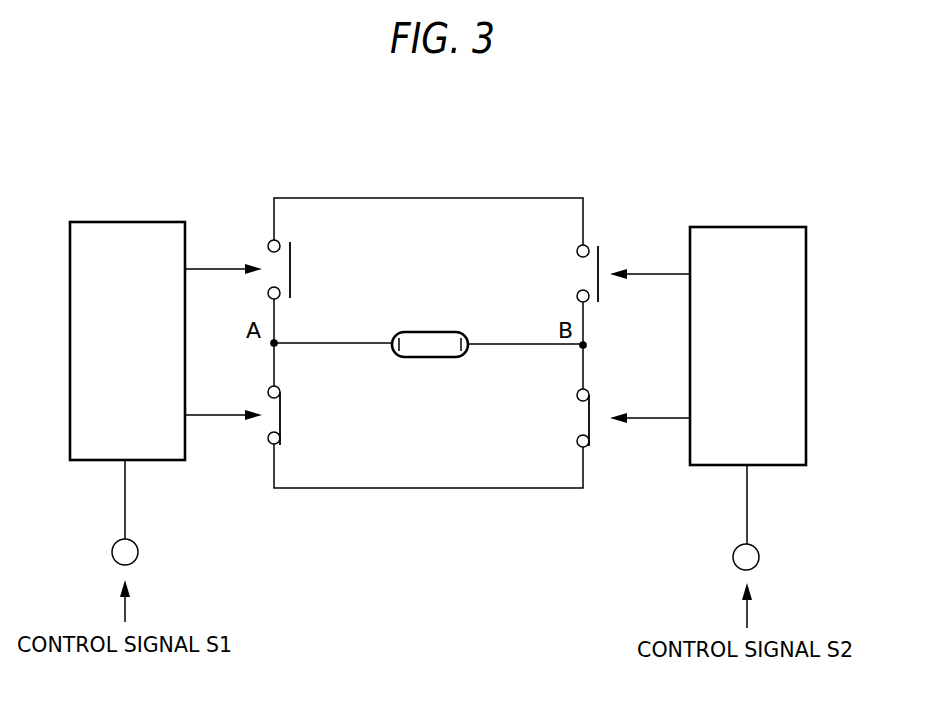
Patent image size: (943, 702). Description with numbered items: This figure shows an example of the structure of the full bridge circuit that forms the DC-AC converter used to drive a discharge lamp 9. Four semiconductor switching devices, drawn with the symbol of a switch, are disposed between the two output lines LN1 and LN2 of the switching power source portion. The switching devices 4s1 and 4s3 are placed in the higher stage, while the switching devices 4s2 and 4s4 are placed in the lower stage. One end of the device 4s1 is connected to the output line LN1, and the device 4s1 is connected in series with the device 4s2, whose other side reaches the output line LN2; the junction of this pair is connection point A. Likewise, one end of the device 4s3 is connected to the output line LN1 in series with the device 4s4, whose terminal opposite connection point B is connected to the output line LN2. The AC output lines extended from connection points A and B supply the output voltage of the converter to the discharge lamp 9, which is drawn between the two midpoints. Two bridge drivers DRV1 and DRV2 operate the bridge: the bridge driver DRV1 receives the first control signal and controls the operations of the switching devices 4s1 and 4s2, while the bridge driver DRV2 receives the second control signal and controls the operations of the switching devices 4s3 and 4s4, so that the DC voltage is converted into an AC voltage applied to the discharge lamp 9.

The switching device 4s1 is at (290, 268).
The switching device 4s2 is at (281, 417).
The switching device 4s3 is at (598, 250).
The switching device 4s4 is at (589, 438).
The discharge lamp 9 is at (432, 332).
The bridge driver DRV1 is at (147, 204).
The bridge driver DRV2 is at (766, 208).
The output line LN1 is at (431, 198).
The output line LN2 is at (431, 488).